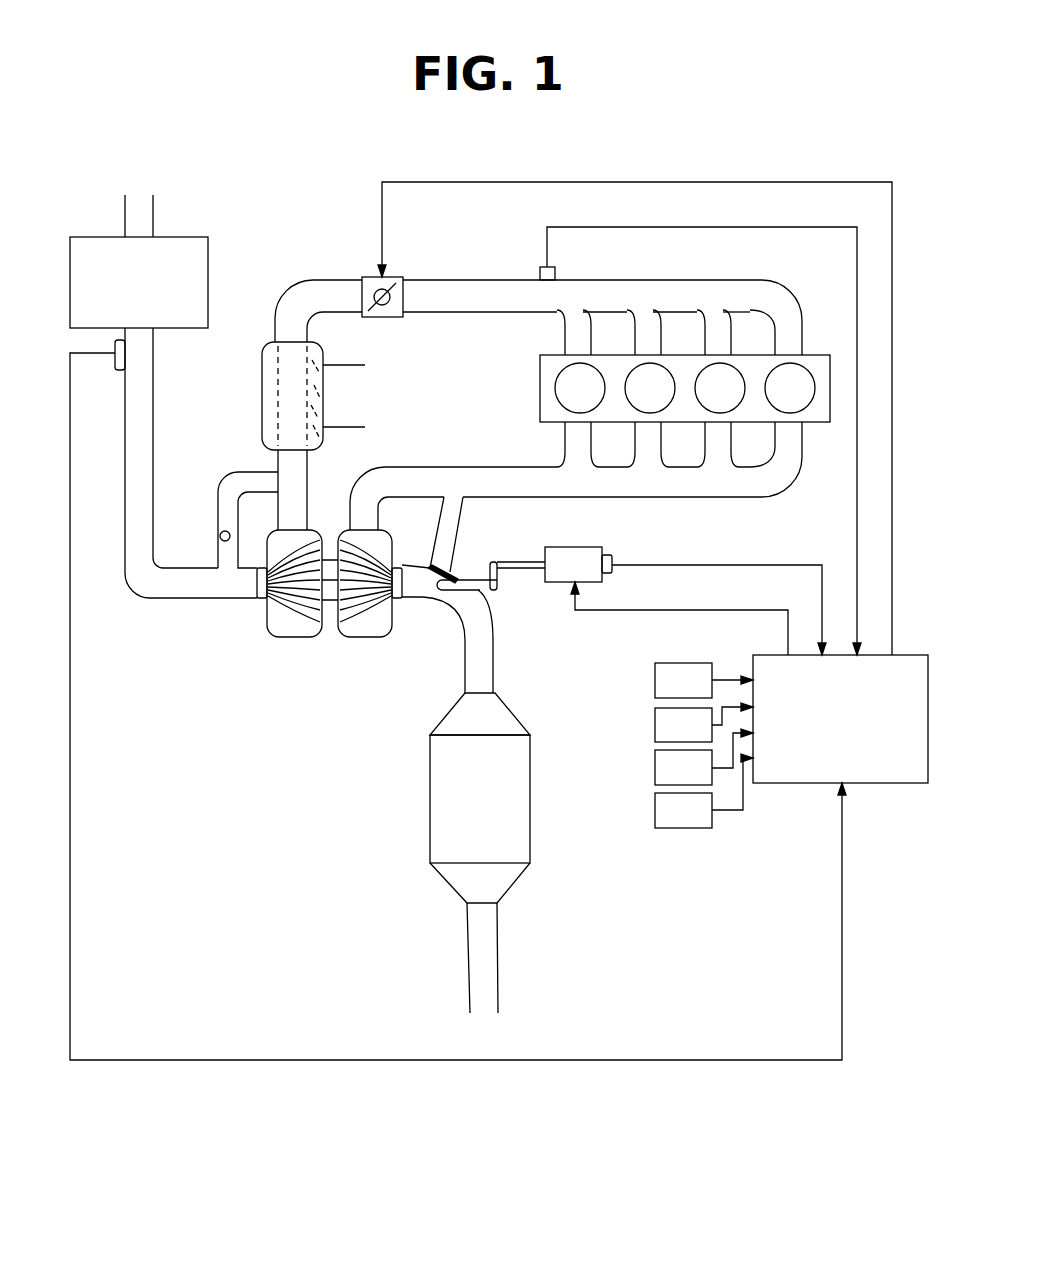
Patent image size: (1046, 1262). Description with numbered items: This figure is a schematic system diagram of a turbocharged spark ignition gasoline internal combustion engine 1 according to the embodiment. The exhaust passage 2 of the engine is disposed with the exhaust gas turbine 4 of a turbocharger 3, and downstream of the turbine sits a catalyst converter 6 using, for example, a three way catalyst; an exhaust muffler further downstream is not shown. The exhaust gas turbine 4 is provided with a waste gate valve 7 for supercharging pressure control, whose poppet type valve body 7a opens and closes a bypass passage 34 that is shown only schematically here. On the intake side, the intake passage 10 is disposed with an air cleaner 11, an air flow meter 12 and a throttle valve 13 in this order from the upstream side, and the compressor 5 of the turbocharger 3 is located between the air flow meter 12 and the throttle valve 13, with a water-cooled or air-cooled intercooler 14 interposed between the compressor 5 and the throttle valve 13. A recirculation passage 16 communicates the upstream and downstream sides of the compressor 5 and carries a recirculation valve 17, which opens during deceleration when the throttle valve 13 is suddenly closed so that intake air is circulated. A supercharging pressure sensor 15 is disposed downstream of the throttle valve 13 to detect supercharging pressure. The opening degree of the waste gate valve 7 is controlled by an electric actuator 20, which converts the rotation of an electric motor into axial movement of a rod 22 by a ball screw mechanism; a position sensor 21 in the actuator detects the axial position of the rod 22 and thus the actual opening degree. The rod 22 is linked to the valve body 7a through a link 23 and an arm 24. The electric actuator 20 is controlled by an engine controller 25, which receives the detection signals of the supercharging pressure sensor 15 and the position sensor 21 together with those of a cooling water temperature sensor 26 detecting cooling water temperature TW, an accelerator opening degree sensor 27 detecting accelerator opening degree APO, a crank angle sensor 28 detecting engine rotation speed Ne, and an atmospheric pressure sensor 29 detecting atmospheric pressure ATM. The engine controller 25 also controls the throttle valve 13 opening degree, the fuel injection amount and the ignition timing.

The internal combustion engine 1 is at (816, 362).
The exhaust passage 2 is at (735, 483).
The turbocharger 3 is at (329, 632).
The exhaust gas turbine 4 is at (322, 662).
The compressor 5 is at (293, 638).
The catalyst converter 6 is at (437, 805).
The waste gate valve 7 is at (504, 604).
The valve body 7a is at (433, 583).
The intake passage 10 is at (292, 298).
The air cleaner 11 is at (182, 242).
The air flow meter 12 is at (115, 362).
The throttle valve 13 is at (371, 289).
The intercooler 14 is at (268, 390).
The supercharging pressure sensor 15 is at (540, 270).
The recirculation passage 16 is at (258, 477).
The recirculation valve 17 is at (220, 537).
The electric actuator 20 is at (568, 548).
The position sensor 21 is at (612, 560).
The rod 22 is at (496, 562).
The link 23 is at (499, 584).
The arm 24 is at (462, 577).
The engine controller 25 is at (787, 785).
The cooling water temperature sensor 26 is at (655, 681).
The accelerator opening degree sensor 27 is at (655, 726).
The crank angle sensor 28 is at (655, 769).
The atmospheric pressure sensor 29 is at (655, 811).
The bypass passage 34 is at (437, 533).